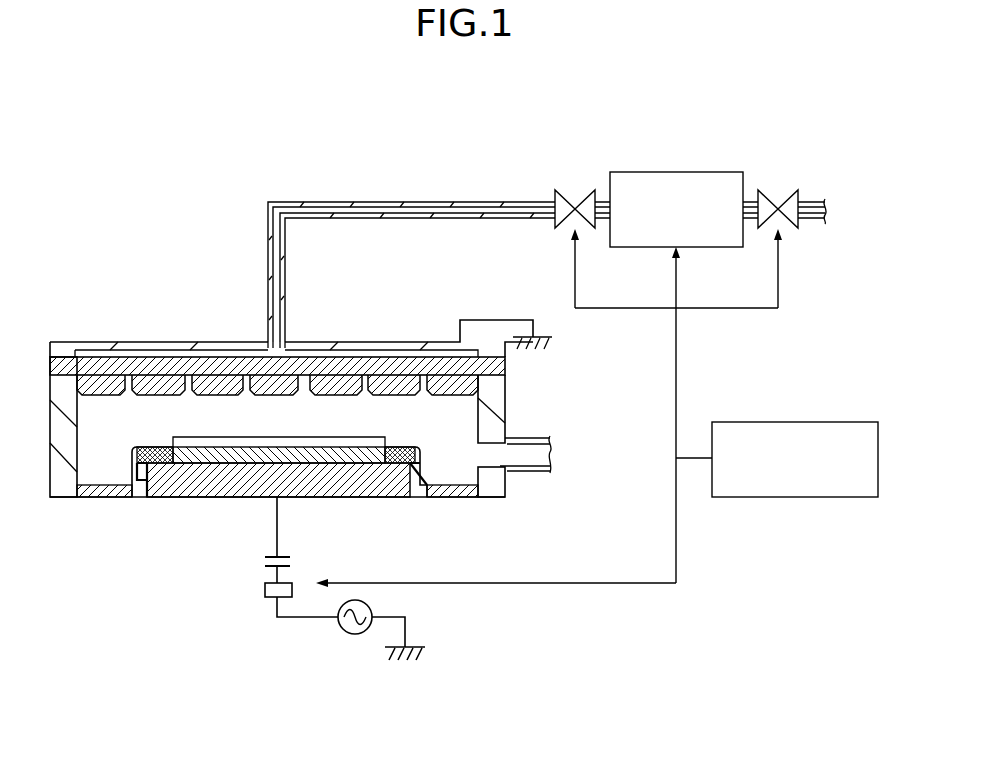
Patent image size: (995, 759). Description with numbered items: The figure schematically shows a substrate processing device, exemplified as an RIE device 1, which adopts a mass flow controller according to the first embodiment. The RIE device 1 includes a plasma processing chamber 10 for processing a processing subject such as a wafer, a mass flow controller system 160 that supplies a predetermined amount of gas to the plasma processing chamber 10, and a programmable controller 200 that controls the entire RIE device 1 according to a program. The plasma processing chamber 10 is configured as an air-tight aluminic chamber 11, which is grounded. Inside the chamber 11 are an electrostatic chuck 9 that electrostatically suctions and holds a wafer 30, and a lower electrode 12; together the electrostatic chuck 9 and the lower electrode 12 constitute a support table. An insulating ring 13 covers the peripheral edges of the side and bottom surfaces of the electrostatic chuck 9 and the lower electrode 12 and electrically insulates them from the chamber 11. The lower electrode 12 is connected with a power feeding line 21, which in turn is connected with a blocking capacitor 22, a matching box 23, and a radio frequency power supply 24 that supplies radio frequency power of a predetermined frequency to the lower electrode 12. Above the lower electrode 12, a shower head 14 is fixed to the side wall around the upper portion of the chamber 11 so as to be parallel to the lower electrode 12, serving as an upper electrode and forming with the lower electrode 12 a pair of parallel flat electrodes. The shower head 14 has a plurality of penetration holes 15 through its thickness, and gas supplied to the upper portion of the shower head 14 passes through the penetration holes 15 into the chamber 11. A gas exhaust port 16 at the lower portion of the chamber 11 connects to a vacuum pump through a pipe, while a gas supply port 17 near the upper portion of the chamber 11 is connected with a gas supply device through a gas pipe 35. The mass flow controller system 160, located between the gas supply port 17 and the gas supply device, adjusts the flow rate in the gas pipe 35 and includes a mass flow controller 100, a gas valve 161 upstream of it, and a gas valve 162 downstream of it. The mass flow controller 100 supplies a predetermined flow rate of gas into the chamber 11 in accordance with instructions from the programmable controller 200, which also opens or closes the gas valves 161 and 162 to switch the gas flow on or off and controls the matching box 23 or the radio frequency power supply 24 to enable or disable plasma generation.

The RIE device 1 is at (170, 128).
The plasma processing chamber 10 is at (102, 273).
The chamber 11 is at (498, 392).
The lower electrode 12 is at (189, 493).
The insulating ring 13 is at (138, 493).
The shower head 14 is at (60, 357).
The penetration holes 15 is at (128, 366).
The gas exhaust port 16 is at (528, 467).
The gas supply port 17 is at (286, 326).
The electrostatic chuck 9 is at (362, 468).
The wafer 30 is at (235, 440).
The power feeding line 21 is at (280, 531).
The blocking capacitor 22 is at (272, 566).
The matching box 23 is at (265, 591).
The radio frequency power supply 24 is at (351, 636).
The gas pipe 35 is at (413, 200).
The mass flow controller system 160 is at (800, 131).
The gas valve 161 is at (780, 198).
The gas valve 162 is at (584, 198).
The mass flow controller 100 is at (700, 172).
The programmable controller 200 is at (837, 422).